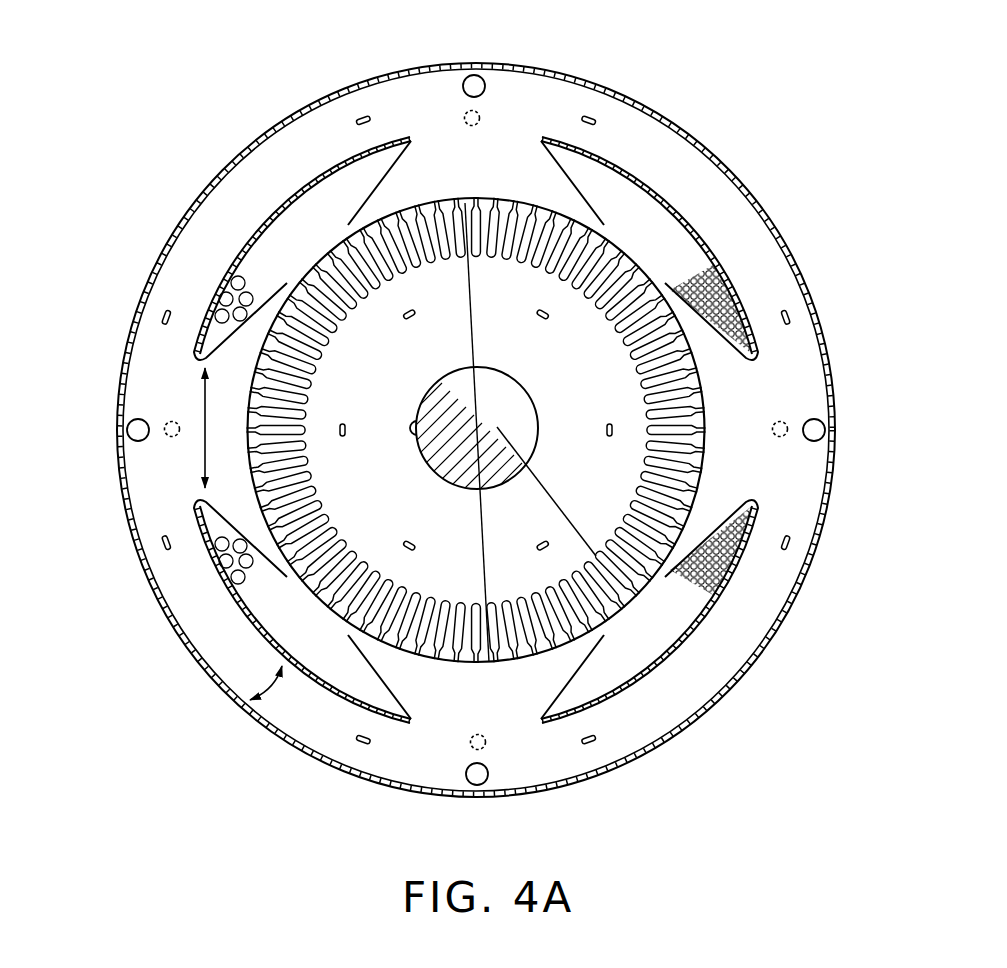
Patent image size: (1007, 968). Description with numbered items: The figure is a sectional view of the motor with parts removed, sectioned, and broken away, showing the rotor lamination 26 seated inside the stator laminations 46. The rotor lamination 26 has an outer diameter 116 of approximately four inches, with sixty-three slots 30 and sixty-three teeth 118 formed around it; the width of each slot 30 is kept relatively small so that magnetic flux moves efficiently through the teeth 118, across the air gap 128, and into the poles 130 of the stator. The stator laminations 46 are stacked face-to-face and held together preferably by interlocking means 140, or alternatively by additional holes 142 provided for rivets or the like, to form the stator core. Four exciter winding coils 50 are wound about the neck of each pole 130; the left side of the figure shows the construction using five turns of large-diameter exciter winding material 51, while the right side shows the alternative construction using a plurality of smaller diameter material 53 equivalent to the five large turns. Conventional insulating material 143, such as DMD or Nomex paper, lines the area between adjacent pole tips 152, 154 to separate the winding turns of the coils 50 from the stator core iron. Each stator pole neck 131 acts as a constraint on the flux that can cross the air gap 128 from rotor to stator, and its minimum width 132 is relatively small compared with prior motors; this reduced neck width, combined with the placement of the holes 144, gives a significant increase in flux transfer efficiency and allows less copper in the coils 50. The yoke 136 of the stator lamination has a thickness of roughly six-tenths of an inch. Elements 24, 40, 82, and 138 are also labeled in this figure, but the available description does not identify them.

The housing 24 is at (643, 600).
The rotor lamination 26 is at (705, 380).
The slot 30 is at (330, 302).
The shell 40 is at (625, 79).
The stator lamination 46 is at (735, 165).
The exciter winding coil 50 is at (255, 290).
The exciter winding material 51 is at (212, 288).
The smaller diameter material 53 is at (740, 303).
The housing wall 82 is at (247, 147).
The outer diameter 116 is at (470, 512).
The tooth 118 is at (450, 198).
The air gap 128 is at (425, 662).
The pole 130 is at (423, 126).
The stator pole neck 131 is at (190, 373).
The stator pole neck minimum width 132 is at (204, 452).
The yoke 136 is at (693, 702).
The clearance 138 is at (228, 692).
The interlocking means 140 is at (412, 322).
The additional holes 142 is at (480, 116).
The insulating material 143 is at (313, 247).
The holes 144 is at (476, 74).
The pole tip 152 is at (287, 287).
The pole tip 154 is at (346, 226).